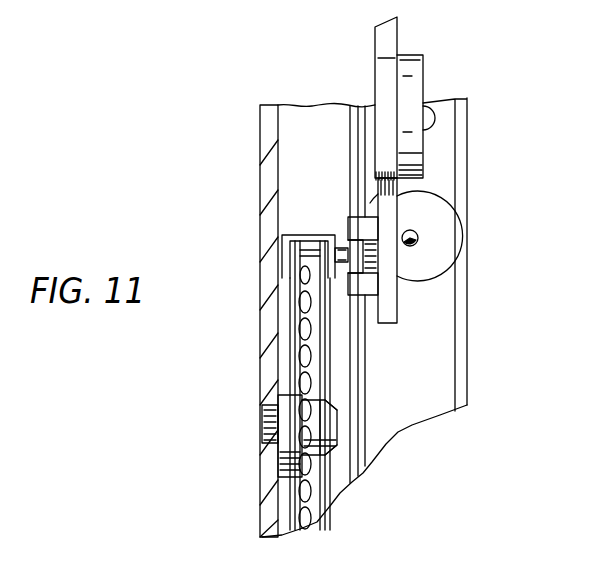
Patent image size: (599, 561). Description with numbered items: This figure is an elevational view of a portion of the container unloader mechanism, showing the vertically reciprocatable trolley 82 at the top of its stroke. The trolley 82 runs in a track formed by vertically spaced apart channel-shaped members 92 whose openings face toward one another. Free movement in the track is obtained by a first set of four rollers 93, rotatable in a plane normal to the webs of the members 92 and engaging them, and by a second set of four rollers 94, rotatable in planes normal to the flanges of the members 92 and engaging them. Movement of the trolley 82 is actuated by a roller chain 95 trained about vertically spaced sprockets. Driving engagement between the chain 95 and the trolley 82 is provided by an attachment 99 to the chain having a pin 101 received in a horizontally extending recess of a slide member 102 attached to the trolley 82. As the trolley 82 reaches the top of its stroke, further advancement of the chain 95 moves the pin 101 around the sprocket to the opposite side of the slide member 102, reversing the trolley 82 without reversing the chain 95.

The trolley 82 is at (368, 213).
The channel-shaped members 92 is at (460, 128).
The rollers 93 is at (413, 67).
The rollers 94 is at (443, 230).
The roller chain 95 is at (278, 394).
The attachment 99 is at (305, 236).
The pin 101 is at (338, 278).
The slide member 102 is at (368, 296).